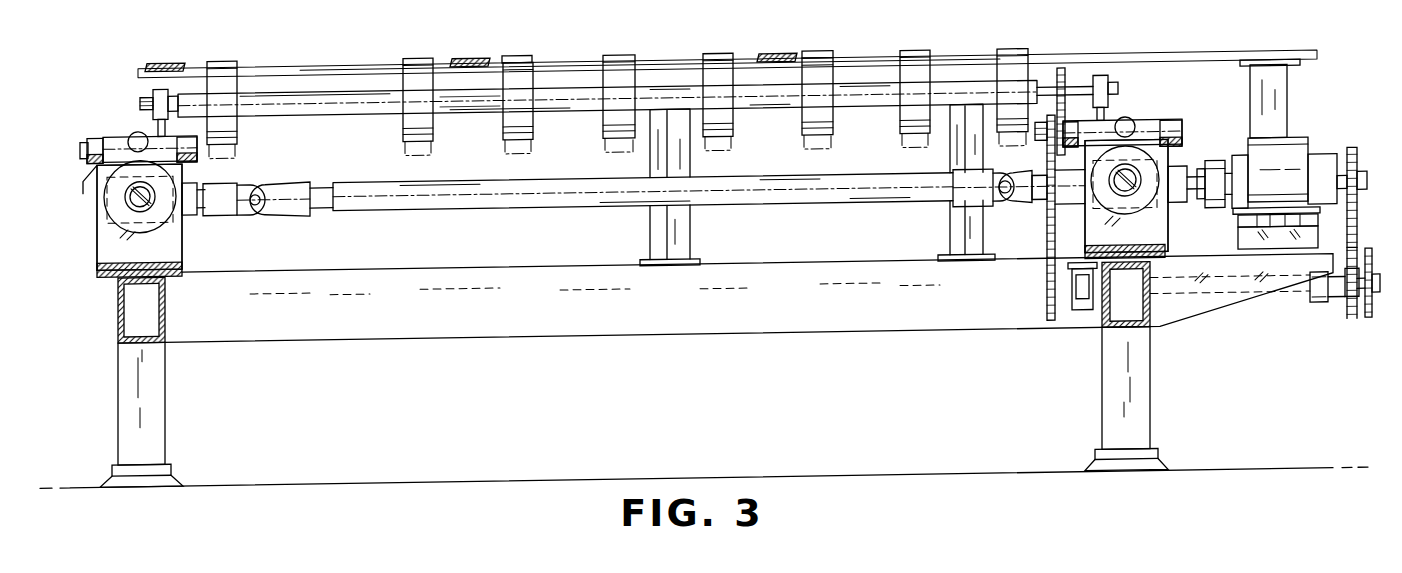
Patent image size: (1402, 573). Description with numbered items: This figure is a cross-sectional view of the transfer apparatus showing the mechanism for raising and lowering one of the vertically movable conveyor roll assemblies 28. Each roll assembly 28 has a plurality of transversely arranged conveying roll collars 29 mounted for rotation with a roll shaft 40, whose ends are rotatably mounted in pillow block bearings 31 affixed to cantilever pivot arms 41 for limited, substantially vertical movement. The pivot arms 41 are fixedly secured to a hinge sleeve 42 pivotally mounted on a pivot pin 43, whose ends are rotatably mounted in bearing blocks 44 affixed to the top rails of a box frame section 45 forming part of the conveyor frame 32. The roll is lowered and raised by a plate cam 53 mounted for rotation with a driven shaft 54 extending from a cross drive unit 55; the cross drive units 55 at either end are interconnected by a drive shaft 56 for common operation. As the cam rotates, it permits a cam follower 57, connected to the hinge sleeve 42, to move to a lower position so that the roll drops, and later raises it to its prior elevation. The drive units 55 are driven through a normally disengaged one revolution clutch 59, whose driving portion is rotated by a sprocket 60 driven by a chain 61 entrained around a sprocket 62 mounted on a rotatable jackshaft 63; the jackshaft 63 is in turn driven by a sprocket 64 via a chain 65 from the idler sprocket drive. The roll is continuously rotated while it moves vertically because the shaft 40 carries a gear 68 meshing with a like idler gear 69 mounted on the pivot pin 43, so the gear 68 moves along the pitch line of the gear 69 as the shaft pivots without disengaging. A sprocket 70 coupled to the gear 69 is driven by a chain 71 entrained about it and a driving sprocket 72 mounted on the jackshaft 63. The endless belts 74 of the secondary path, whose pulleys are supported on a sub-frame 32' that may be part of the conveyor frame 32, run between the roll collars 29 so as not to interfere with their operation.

The vertically movable roll assembly 28 is at (590, 124).
The conveying roll collar 29 is at (405, 132).
The pillow block bearing 31 is at (155, 95).
The conveyor frame 32 is at (716, 371).
The sub-frame 32' is at (817, 185).
The roll shaft 40 is at (480, 110).
The cantilever pivot arm 41 is at (160, 128).
The hinge sleeve 42 is at (120, 142).
The pivot pin 43 is at (85, 150).
The bearing block 44 is at (92, 158).
The box frame section 45 is at (84, 182).
The plate cam 53 is at (115, 198).
The driven shaft 54 is at (136, 206).
The cross drive unit 55 is at (190, 218).
The drive shaft 56 is at (503, 218).
The cam follower 57 is at (135, 136).
The one revolution clutch 59 is at (1295, 160).
The sprocket 60 is at (1352, 172).
The chain 61 is at (1358, 235).
The sprocket 62 is at (1325, 325).
The jackshaft 63 is at (1280, 305).
The sprocket 64 is at (1355, 342).
The sprocket 65 is at (1372, 325).
The gear 68 is at (1050, 130).
The idler gear 69 is at (1062, 125).
The sprocket 70 is at (1040, 152).
The chain 71 is at (1038, 230).
The driving sprocket 72 is at (1062, 332).
The endless belt 74 is at (170, 66).